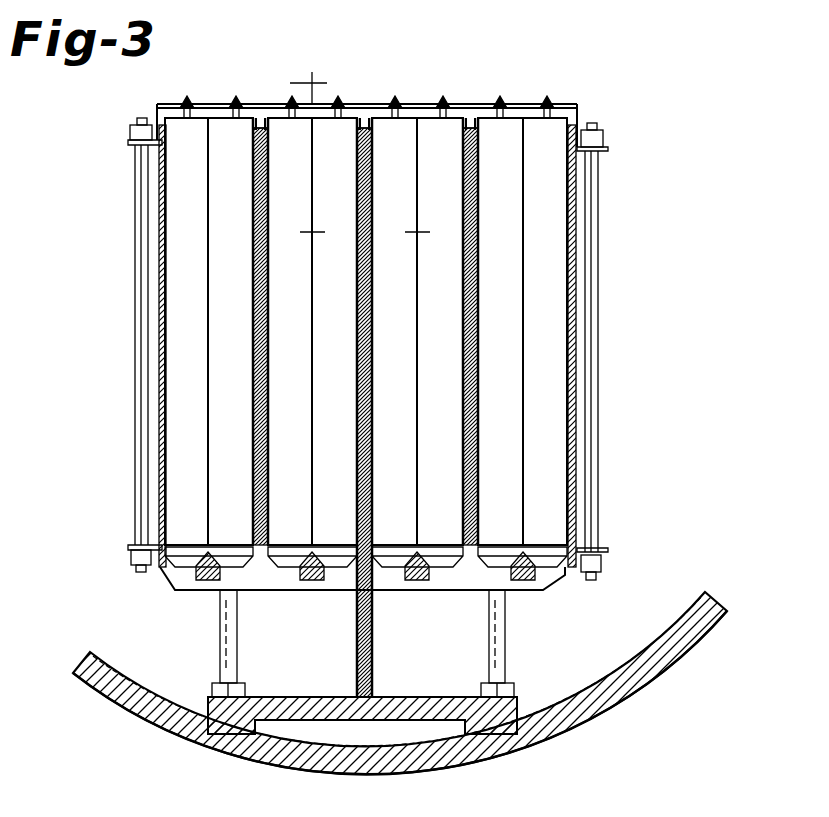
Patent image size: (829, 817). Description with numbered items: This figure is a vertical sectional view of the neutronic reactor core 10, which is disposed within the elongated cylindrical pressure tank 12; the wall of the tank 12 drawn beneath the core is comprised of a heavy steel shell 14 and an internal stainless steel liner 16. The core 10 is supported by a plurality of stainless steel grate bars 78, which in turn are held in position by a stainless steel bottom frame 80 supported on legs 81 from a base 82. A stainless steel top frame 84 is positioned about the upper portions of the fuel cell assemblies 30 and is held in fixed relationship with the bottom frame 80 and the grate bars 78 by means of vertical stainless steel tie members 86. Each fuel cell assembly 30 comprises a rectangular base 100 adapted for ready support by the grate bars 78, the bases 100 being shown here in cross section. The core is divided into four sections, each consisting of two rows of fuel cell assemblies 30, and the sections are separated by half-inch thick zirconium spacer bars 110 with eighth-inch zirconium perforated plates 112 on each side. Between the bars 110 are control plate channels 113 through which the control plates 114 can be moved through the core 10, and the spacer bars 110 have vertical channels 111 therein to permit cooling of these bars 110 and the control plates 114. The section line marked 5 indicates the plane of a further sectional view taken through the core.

The section line 5- 5 is at (114, 83).
The reactor core 10 is at (595, 107).
The pressure tank 12 is at (667, 627).
The steel shell 14 is at (678, 661).
The stainless steel liner 16 is at (610, 673).
The fuel cell assembly 30 is at (327, 150).
The grate bar 78 is at (210, 580).
The bottom frame 80 is at (165, 582).
The leg 81 is at (222, 636).
The base 82 is at (430, 692).
The top frame 84 is at (518, 106).
The tie member 86 is at (140, 258).
The rectangular base 100 is at (338, 563).
The spacer bar 110 is at (358, 166).
The vertical channel 111 is at (465, 163).
The perforated plate 112 is at (163, 212).
The control plate channel 113 is at (358, 187).
The control plate 114 is at (314, 280).